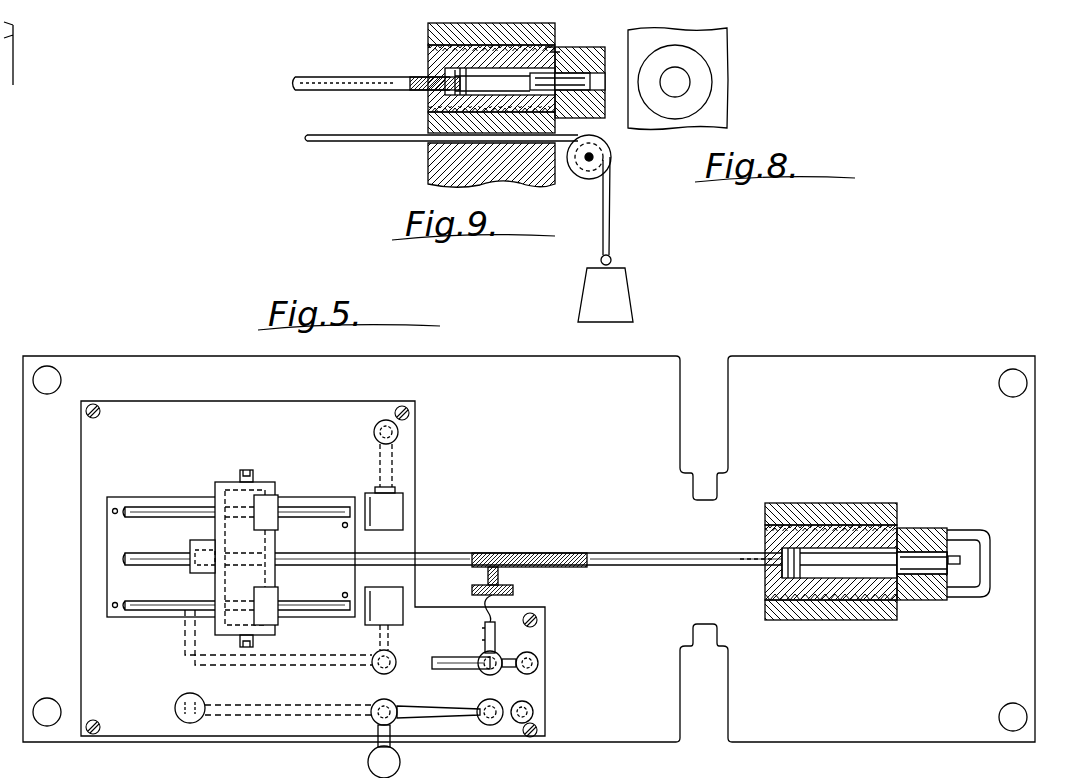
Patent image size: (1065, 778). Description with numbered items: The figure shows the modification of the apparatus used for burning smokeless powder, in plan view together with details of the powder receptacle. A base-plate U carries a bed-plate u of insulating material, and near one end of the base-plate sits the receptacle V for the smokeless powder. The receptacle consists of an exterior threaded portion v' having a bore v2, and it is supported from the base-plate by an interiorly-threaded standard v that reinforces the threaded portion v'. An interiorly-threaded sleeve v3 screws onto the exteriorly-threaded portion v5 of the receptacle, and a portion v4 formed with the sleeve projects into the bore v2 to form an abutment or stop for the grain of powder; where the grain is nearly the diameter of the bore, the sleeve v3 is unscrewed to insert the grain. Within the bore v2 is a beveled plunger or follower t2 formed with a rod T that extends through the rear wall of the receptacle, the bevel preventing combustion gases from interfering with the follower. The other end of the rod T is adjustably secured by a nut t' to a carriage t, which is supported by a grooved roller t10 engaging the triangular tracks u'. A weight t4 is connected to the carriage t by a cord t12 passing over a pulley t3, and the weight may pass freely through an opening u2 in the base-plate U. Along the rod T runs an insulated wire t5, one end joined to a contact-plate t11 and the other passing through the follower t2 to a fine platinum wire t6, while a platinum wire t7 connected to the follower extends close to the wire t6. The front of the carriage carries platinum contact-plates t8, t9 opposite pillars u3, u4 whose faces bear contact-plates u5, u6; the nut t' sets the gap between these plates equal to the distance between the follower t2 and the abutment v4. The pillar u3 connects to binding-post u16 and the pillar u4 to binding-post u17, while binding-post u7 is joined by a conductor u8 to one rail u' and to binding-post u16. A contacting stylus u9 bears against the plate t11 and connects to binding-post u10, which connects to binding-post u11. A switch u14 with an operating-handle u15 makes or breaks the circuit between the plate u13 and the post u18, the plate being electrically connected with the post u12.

In FIG. 5, the base-plate U is at (529, 549).
In FIG. 5, the bed-plate u is at (313, 569).
In FIG. 5, the triangular tracks u' is at (231, 557).
In FIG. 5, the opening u2 is at (975, 530).
In FIG. 5, the pillar u3 is at (382, 606).
In FIG. 5, the pillar u4 is at (381, 511).
In FIG. 5, the contact-plate u5 is at (368, 596).
In FIG. 5, the contact-plate u6 is at (365, 503).
In FIG. 5, the binding-post u7 is at (175, 712).
In FIG. 5, the conductor u8 is at (183, 683).
In FIG. 5, the contacting stylus u9 is at (482, 622).
In FIG. 5, the binding-post u10 is at (478, 654).
In FIG. 5, the binding-post u11 is at (538, 661).
In FIG. 5, the binding-post u12 is at (533, 712).
In FIG. 5, the plate u13 is at (481, 700).
In FIG. 5, the switch u14 is at (437, 696).
In FIG. 5, the operating-handle u15 is at (367, 762).
In FIG. 5, the binding-post u16 is at (396, 655).
In FIG. 5, the binding-post u17 is at (374, 430).
In FIG. 5, the post u18 is at (392, 692).
In FIG. 5, the rod T is at (455, 532).
In FIG. 5, the carriage t is at (245, 558).
In FIG. 5, the nut t' is at (196, 543).
In FIG. 9, the follower t2 is at (470, 68).
In FIG. 5, the follower t2 is at (800, 548).
In FIG. 9, the pulley t3 is at (612, 152).
In FIG. 9, the weight t4 is at (605, 239).
In FIG. 5, the weight t4 is at (960, 560).
In FIG. 5, the wire t5 is at (543, 550).
In FIG. 9, the platinum wire t6 is at (492, 83).
In FIG. 9, the platinum wire t7 is at (430, 100).
In FIG. 5, the contact-plate t8 is at (278, 595).
In FIG. 5, the contact-plate t9 is at (278, 500).
In FIG. 5, the roller t10 is at (226, 482).
In FIG. 5, the contact-plate t11 is at (513, 590).
In FIG. 9, the cord t12 is at (340, 143).
In FIG. 9, the receptacle V is at (502, 66).
In FIG. 9, the standard v is at (474, 165).
In FIG. 5, the standard v is at (909, 625).
In FIG. 9, the threaded portion v' is at (409, 45).
In FIG. 5, the threaded portion v' is at (746, 535).
In FIG. 9, the bore v2 is at (500, 81).
In FIG. 5, the bore v2 is at (839, 563).
In FIG. 9, the sleeve v3 is at (595, 62).
In FIG. 8, the sleeve v3 is at (705, 78).
In FIG. 5, the sleeve v3 is at (922, 528).
In FIG. 9, the abutment v4 is at (560, 82).
In FIG. 8, the abutment v4 is at (675, 82).
In FIG. 5, the abutment v4 is at (922, 563).
In FIG. 9, the exteriorly-threaded portion v5 is at (566, 55).